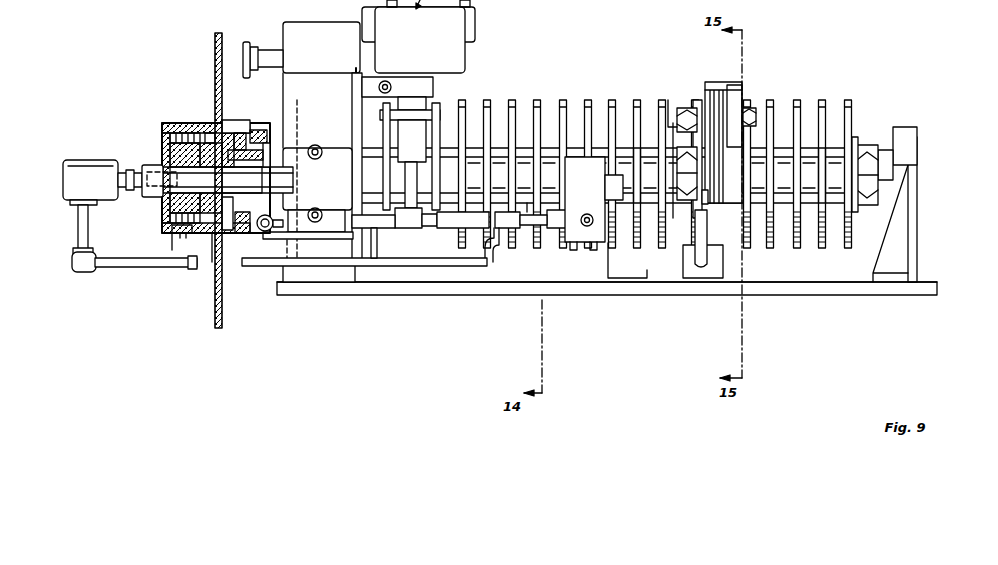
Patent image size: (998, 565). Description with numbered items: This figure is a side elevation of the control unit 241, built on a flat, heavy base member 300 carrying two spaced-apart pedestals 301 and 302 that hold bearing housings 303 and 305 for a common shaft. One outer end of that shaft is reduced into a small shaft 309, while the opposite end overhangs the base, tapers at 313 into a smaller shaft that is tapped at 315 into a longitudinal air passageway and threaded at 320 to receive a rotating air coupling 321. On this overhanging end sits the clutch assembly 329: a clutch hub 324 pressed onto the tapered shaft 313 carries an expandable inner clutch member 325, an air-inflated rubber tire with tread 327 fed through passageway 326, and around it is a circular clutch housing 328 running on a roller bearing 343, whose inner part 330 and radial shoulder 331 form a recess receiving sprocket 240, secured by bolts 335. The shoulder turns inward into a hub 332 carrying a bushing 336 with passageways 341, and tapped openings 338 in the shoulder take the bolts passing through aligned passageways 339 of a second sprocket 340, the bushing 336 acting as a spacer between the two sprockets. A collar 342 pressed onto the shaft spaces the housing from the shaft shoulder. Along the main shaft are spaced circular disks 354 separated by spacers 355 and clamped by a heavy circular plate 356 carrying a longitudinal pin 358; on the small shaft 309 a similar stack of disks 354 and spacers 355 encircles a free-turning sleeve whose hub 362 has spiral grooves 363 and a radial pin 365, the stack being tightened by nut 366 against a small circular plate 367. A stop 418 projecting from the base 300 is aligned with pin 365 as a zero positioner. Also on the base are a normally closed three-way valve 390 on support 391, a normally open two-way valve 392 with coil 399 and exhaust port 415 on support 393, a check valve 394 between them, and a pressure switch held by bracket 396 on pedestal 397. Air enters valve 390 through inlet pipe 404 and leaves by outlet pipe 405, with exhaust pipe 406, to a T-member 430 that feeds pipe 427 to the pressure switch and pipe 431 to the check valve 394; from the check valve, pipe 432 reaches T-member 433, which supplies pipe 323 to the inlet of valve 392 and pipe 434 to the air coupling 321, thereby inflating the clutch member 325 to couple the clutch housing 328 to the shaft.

The sprocket 240 is at (222, 50).
The control unit 241 is at (700, 296).
The base member 300 is at (921, 282).
The pedestal 301 is at (917, 145).
The pedestal 302 is at (285, 106).
The bearing housing 303 is at (901, 127).
The bearing housing 305 is at (289, 140).
The small shaft 309 is at (250, 153).
The tapered shaft 313 is at (163, 206).
The tapped longitudinal passageway 315 is at (150, 192).
The threaded shaft end 320 is at (136, 168).
The rotating air coupling 321 is at (90, 182).
The pipe 323 is at (527, 210).
The clutch hub 324 is at (168, 216).
The expandable inner clutch member 325 is at (175, 235).
The passageway 326 is at (160, 153).
The tread 327 is at (172, 252).
The circular clutch housing 328 is at (184, 238).
The clutch assembly 329 is at (175, 122).
The inner part of clutch housing 330 is at (200, 125).
The radial shoulder 331 is at (212, 263).
The hub 332 is at (238, 170).
The dog point screws 335 is at (240, 133).
The bushing 336 is at (233, 250).
The tapped openings 338 is at (228, 180).
The passageways 339 is at (217, 126).
The sprocket 340 is at (256, 130).
The passageways 341 is at (228, 120).
The collar 342 is at (270, 232).
The roller bearing 343 is at (210, 130).
The circular disks 354 is at (637, 100).
The spacer 355 is at (634, 140).
The heavy circular plate 356 is at (678, 124).
The longitudinal pin 358 is at (688, 218).
The hub 362 is at (742, 204).
The spiral grooves 363 is at (708, 200).
The radial pin 365 is at (694, 259).
The nut 366 is at (862, 147).
The small circular plate 367 is at (854, 137).
The three-way valve 390 is at (355, 148).
The support 391 is at (319, 272).
The two-way valve 392 is at (581, 248).
The support 393 is at (616, 278).
The check valve 394 is at (477, 237).
The bracket 396 is at (434, 88).
The pedestal 397 is at (356, 70).
The coil 399 is at (267, 143).
The inlet pipe 404 is at (270, 246).
The outlet pipe 405 is at (373, 260).
The exhaust pipe 406 is at (321, 210).
The exhaust port 415 is at (587, 213).
The stop 418 is at (730, 274).
The pipe 427 is at (403, 170).
The T-member 430 is at (408, 218).
The pipe 431 is at (424, 208).
The pipe 432 is at (480, 210).
The T-member 433 is at (516, 237).
The pipe 434 is at (77, 226).